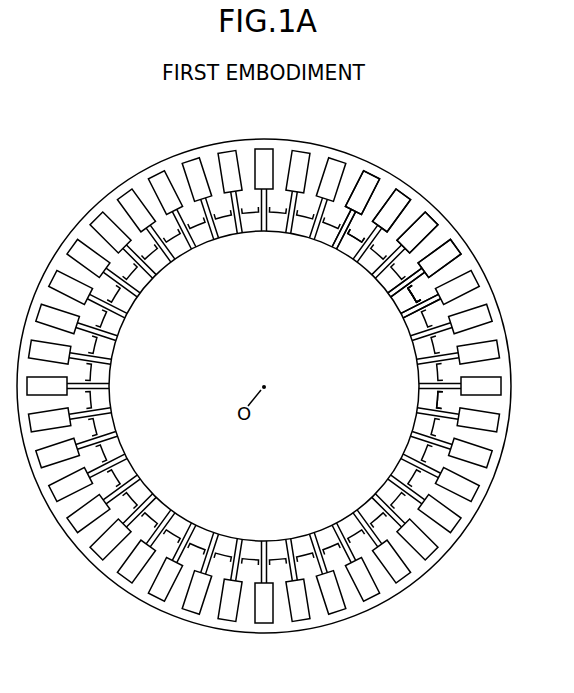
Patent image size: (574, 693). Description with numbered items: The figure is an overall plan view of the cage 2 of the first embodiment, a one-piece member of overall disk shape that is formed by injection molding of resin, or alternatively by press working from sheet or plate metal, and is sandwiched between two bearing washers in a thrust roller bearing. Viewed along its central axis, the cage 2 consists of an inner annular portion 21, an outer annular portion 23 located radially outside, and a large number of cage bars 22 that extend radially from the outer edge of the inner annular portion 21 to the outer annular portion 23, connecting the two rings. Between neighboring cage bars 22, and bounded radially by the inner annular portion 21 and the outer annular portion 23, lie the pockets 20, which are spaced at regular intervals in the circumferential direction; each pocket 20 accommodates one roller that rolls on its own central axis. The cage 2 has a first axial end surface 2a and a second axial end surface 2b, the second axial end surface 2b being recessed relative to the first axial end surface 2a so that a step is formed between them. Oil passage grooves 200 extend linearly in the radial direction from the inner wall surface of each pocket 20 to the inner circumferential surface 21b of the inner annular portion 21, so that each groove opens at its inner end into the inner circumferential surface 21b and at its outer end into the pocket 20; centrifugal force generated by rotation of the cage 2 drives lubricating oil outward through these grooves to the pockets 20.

The cage 2 is at (122, 166).
The oil passage groove 200 is at (385, 297).
The cage bar 22 is at (382, 192).
The outer annular portion 23 is at (435, 215).
The pocket 20 is at (455, 252).
The first axial end surface 2a is at (421, 290).
The inner annular portion 21 is at (352, 245).
The second axial end surface 2b is at (404, 300).
The inner circumferential surface 21b is at (423, 393).